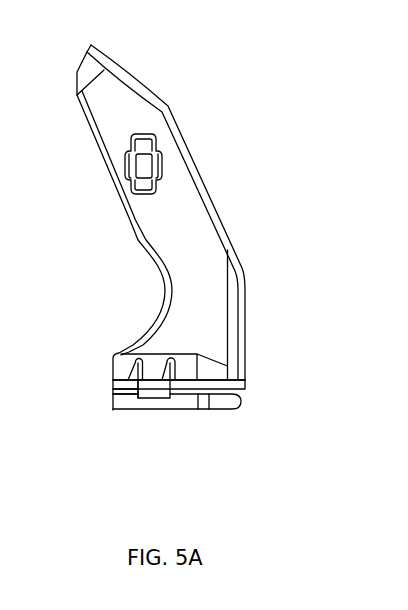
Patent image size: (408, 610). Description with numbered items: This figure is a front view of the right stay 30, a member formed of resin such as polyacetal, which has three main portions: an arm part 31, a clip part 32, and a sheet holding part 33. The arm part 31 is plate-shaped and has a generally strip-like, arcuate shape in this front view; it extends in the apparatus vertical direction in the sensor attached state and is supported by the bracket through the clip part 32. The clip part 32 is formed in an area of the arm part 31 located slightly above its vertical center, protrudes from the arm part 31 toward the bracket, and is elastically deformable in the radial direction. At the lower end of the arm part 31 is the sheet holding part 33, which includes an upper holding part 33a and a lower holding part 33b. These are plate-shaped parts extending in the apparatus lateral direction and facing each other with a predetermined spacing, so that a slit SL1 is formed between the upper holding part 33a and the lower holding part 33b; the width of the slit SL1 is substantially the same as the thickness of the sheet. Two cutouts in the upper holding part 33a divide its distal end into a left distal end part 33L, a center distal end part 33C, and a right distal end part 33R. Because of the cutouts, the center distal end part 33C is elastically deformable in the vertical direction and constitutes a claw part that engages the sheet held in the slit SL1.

The right stay 30 is at (201, 130).
The arm part 31 is at (212, 198).
The clip part 32 is at (118, 162).
The sheet holding part 33 is at (189, 402).
The upper holding part 33a is at (241, 386).
The lower holding part 33b is at (241, 400).
The left distal end part 33L is at (118, 386).
The center distal end part 33C is at (152, 387).
The right distal end part 33R is at (212, 384).
The slit SL1 is at (104, 390).